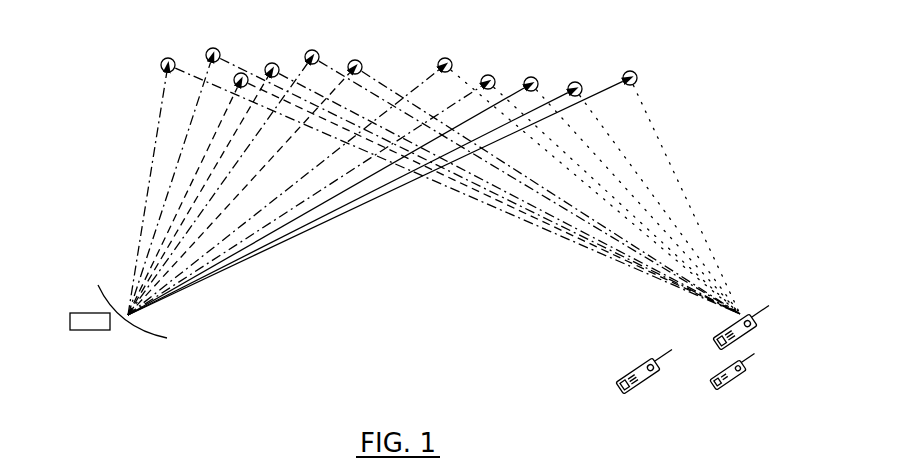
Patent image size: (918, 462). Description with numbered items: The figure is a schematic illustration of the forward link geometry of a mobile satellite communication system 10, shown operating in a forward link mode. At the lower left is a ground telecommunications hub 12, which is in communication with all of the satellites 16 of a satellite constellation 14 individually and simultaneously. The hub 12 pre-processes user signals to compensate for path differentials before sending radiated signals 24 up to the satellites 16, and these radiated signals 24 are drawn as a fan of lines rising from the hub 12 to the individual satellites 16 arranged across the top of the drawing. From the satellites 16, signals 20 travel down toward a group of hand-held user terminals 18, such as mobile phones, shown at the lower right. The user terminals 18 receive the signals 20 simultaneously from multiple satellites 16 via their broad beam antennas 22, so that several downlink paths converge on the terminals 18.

The mobile satellite communication system 10 is at (330, 44).
The ground telecommunications hub 12 is at (80, 312).
The satellite constellation 14 is at (561, 71).
The individual satellites 16 is at (452, 59).
The hand-held user terminals 18 is at (713, 366).
The signals 20 is at (638, 200).
The broad beam antennas 22 is at (752, 360).
The radiated signals 24 is at (180, 210).